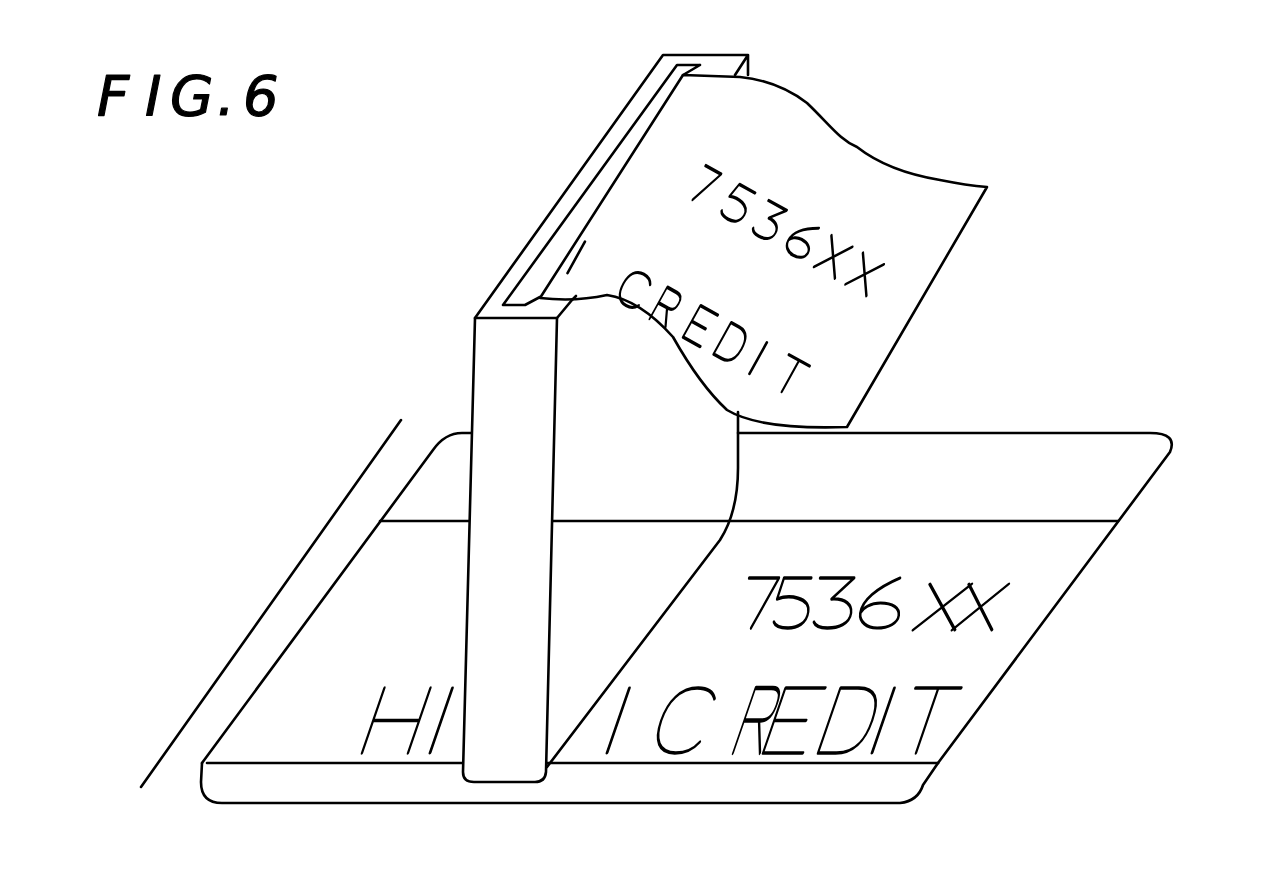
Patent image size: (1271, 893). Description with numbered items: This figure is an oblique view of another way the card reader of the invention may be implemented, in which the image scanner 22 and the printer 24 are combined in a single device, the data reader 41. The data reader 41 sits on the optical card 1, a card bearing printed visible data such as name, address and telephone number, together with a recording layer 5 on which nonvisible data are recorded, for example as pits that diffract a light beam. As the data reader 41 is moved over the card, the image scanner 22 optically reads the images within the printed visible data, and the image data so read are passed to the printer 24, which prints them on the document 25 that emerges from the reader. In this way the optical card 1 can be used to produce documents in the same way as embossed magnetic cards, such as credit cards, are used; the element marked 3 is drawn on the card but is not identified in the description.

The optical card 1 is at (286, 587).
The magnetic stripe 3 is at (1113, 485).
The recording layer 5 is at (993, 652).
The image scanner 22 is at (675, 545).
The printer 24 is at (633, 132).
The document 25 is at (870, 173).
The data reader 41 is at (485, 337).